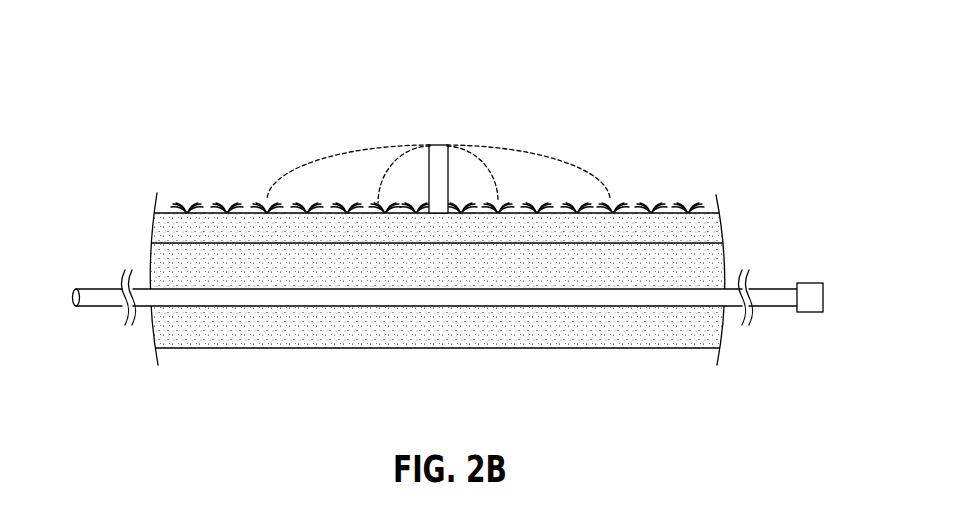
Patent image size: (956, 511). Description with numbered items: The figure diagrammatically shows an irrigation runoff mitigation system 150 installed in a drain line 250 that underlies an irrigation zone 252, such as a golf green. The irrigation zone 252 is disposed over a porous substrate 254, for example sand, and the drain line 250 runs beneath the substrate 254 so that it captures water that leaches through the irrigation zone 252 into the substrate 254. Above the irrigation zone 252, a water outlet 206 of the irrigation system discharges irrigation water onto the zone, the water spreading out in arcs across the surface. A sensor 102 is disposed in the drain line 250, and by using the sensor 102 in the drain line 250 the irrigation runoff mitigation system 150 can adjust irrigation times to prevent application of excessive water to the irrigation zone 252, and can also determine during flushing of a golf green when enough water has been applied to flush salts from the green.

The irrigation runoff mitigation system 150 is at (681, 80).
The water outlet 206 is at (438, 150).
The sensor 102 is at (810, 288).
The drain line 250 is at (245, 298).
The irrigation zone 252 is at (385, 233).
The porous substrate 254 is at (612, 327).